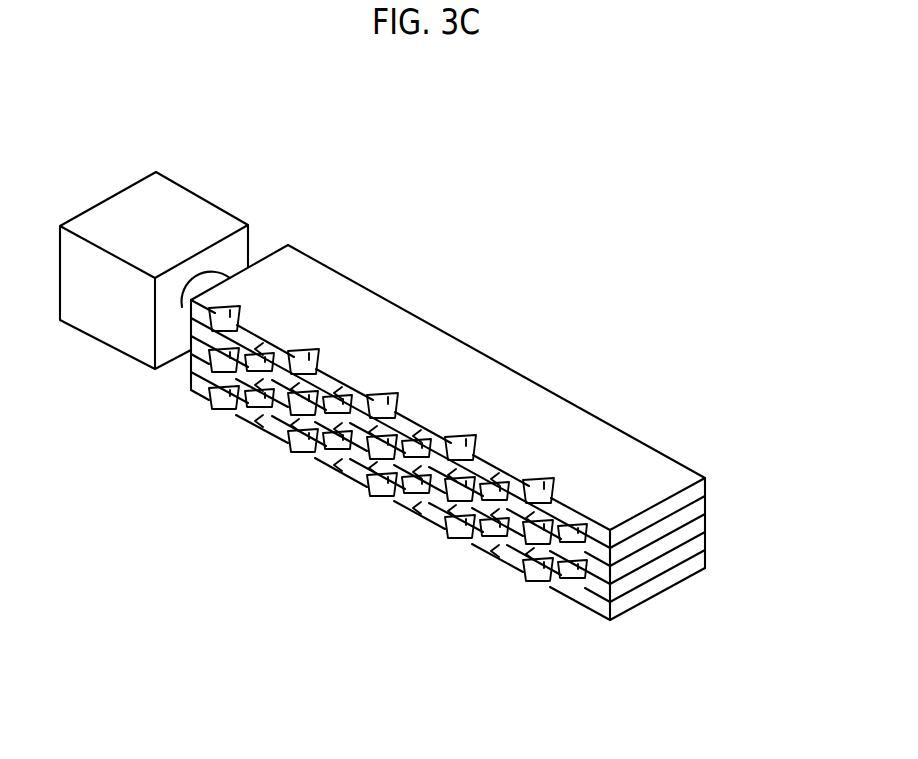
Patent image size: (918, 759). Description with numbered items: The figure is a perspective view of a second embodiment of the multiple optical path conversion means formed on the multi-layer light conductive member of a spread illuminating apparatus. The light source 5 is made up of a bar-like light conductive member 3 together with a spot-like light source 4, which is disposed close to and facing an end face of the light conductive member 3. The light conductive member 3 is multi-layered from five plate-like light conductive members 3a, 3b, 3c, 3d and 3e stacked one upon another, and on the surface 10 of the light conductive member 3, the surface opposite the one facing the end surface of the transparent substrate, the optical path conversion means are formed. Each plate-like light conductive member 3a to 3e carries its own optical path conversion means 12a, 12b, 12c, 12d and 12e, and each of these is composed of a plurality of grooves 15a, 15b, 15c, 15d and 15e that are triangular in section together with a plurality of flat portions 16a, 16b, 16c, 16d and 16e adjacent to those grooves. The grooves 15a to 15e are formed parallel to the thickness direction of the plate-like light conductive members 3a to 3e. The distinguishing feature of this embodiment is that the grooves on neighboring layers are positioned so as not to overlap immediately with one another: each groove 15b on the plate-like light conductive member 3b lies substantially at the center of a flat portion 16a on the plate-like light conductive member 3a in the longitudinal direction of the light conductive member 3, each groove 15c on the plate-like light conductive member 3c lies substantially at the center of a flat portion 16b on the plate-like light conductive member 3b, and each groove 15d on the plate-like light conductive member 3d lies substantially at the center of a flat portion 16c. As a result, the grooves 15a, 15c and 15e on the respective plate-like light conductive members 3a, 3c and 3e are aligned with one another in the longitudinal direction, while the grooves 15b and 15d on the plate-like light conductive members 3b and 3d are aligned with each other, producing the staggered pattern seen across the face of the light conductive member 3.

The light conductive member 3 is at (302, 268).
The plate-like light conductive member 3a is at (707, 487).
The plate-like light conductive member 3b is at (707, 505).
The plate-like light conductive member 3c is at (707, 523).
The plate-like light conductive member 3d is at (707, 541).
The plate-like light conductive member 3e is at (707, 559).
The spot-like light source 4 is at (222, 226).
The light source 5 is at (318, 153).
The surface 10 is at (190, 372).
The optical path conversion means 12a is at (455, 178).
The optical path conversion means 12b is at (728, 277).
The optical path conversion means 12c is at (432, 622).
The optical path conversion means 12d is at (104, 518).
The optical path conversion means 12e is at (86, 437).
The groove 15a is at (240, 307).
The groove 15b is at (275, 354).
The groove 15c is at (204, 372).
The groove 15d is at (565, 642).
The groove 15e is at (212, 409).
The flat portion 16a is at (265, 345).
The flat portion 16b is at (534, 510).
The flat portion 16c is at (565, 565).
The flat portion 16d is at (262, 448).
The flat portion 16e is at (252, 425).